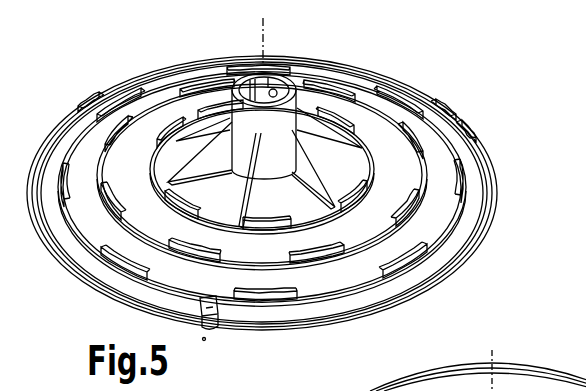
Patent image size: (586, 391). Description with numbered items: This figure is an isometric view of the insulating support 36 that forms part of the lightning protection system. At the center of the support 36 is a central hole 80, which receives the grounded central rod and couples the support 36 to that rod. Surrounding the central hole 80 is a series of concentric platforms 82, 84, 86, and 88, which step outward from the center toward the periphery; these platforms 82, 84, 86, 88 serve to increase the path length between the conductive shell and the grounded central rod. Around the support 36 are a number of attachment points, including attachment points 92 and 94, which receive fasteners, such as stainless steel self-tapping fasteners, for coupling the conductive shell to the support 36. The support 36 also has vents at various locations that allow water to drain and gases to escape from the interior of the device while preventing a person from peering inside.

The insulating support 36 is at (108, 70).
The central hole 80 is at (266, 88).
The platform 82 is at (452, 108).
The platform 84 is at (468, 136).
The platform 86 is at (476, 168).
The platform 88 is at (353, 225).
The attachment point 92 is at (210, 331).
The attachment point 94 is at (98, 94).